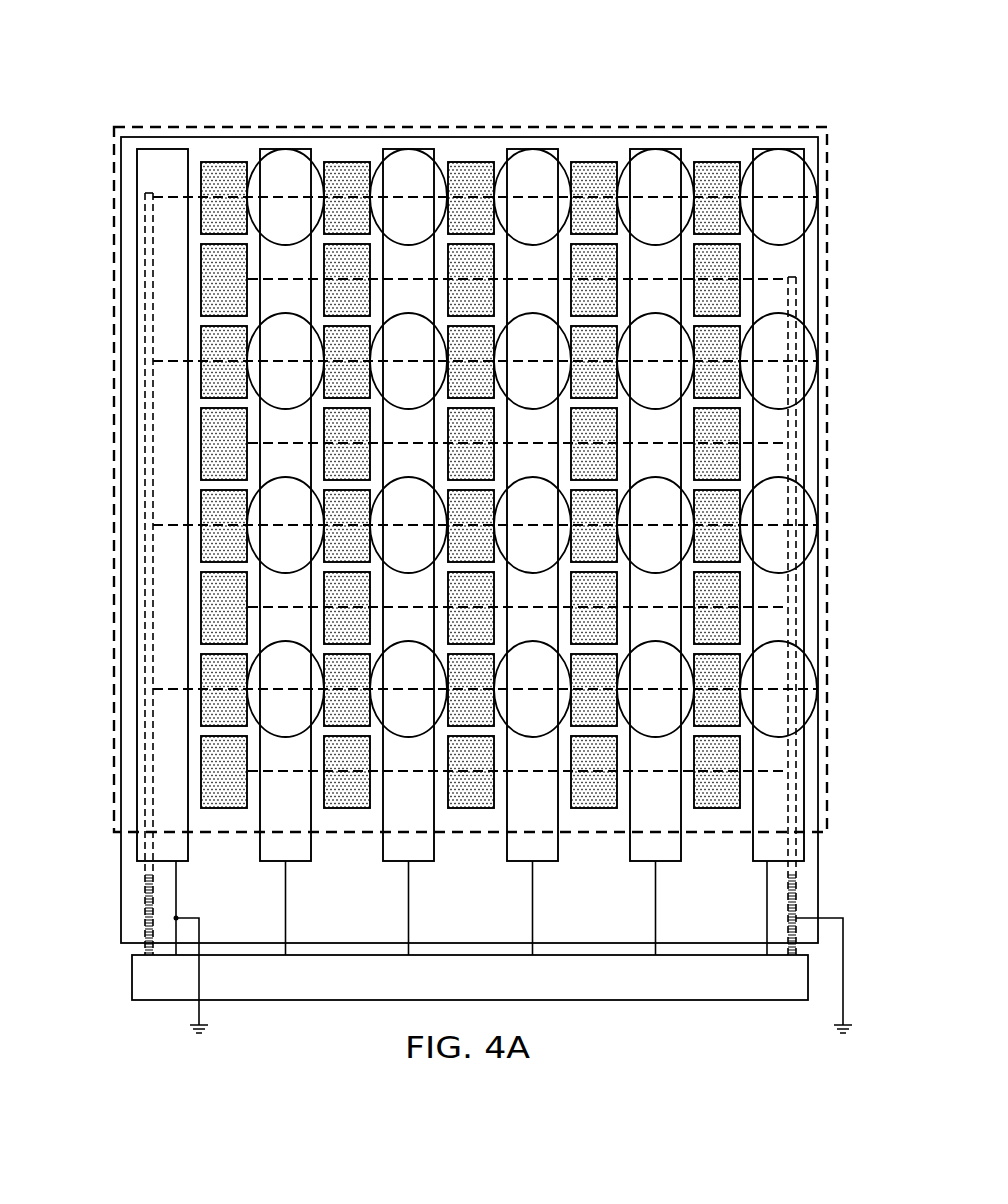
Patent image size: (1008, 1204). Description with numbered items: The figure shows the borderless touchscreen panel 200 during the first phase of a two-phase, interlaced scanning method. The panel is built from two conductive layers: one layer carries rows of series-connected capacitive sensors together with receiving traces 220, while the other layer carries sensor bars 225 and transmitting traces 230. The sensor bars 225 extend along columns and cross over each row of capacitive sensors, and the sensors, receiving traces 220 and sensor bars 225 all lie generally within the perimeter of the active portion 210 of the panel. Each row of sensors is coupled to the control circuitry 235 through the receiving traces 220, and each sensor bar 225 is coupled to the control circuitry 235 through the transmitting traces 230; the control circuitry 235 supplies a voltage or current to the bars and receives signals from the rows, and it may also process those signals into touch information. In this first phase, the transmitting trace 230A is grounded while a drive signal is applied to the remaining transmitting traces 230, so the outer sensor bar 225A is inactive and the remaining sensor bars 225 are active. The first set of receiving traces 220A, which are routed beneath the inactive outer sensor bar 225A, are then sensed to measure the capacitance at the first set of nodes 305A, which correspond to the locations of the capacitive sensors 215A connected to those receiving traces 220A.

The borderless touchscreen panel 200 is at (336, 54).
The active portion 210 is at (580, 838).
The capacitive sensors 215A is at (188, 183).
The receiving traces 220 is at (797, 889).
The first set of receiving traces 220A is at (168, 197).
The sensor bars 225 is at (286, 162).
The outer sensor bar 225A is at (162, 160).
The transmitting traces 230 is at (285, 910).
The transmitting trace 230A is at (176, 898).
The control circuitry 235 is at (596, 1002).
The first set of nodes 305A is at (783, 244).